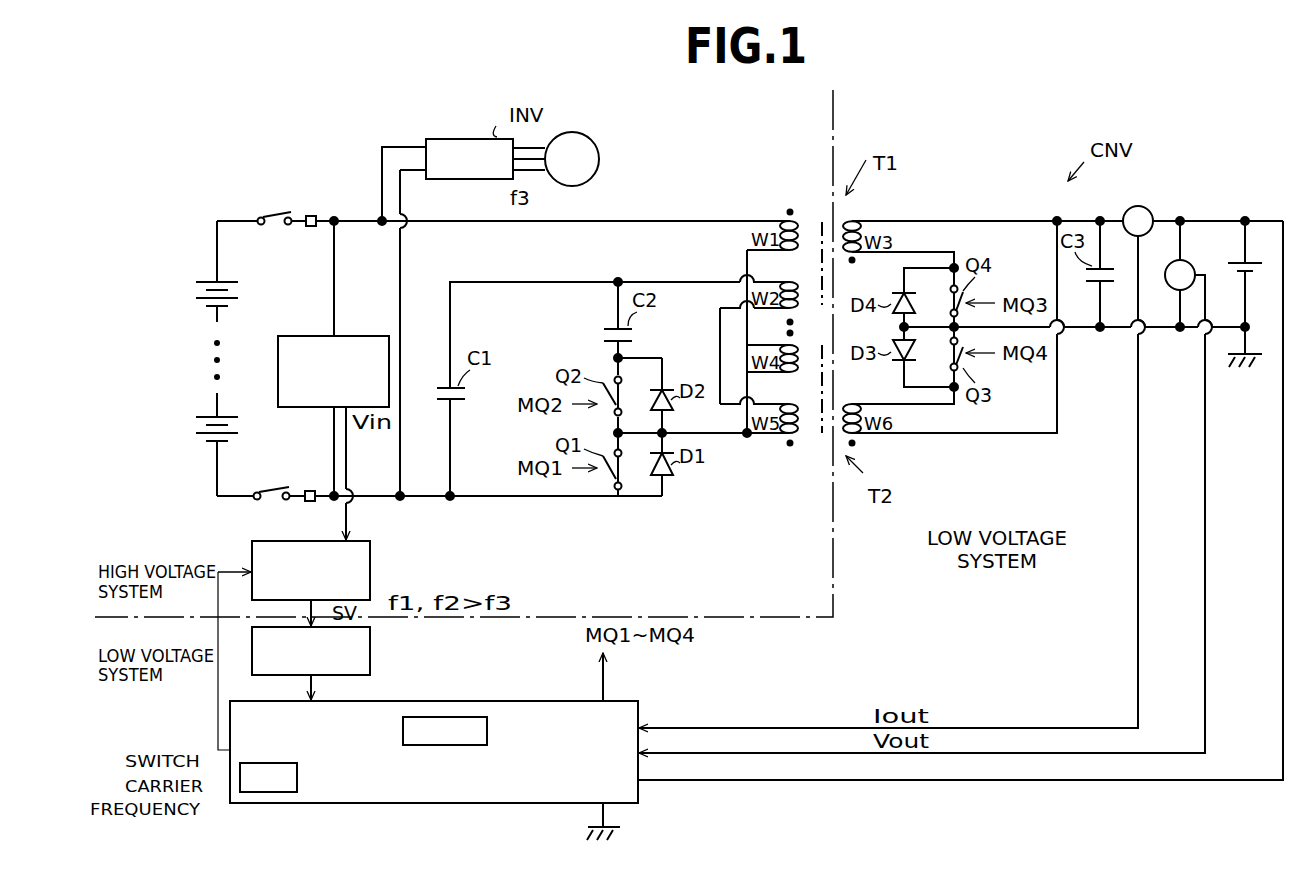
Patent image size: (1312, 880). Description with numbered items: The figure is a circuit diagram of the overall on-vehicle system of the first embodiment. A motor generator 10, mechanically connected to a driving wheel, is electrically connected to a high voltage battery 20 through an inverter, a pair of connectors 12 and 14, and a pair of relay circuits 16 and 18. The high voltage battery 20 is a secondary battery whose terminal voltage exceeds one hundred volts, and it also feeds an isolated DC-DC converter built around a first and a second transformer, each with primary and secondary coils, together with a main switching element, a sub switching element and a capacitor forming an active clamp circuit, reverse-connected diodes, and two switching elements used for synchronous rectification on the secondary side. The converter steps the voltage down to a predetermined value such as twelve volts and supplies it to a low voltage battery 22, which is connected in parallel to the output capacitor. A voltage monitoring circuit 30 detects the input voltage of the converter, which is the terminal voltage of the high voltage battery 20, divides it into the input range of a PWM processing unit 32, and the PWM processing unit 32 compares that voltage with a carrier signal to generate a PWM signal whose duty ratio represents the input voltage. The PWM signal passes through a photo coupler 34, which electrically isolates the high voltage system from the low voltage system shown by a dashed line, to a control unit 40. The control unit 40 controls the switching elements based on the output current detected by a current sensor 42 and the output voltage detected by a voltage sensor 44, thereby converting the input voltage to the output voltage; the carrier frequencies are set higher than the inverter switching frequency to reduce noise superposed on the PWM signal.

The motor generator 10 is at (598, 140).
The connector 12 is at (310, 214).
The connector 14 is at (309, 489).
The relay circuit 16 is at (266, 214).
The relay circuit 18 is at (263, 489).
The high voltage battery 20 is at (203, 281).
The low voltage battery 22 is at (1252, 262).
The voltage monitoring circuit 30 is at (306, 335).
The PWM processing unit 32 is at (371, 571).
The photo coupler 34 is at (371, 654).
The control unit 40 is at (545, 699).
The current sensor 42 is at (1130, 207).
The voltage sensor 44 is at (1191, 264).